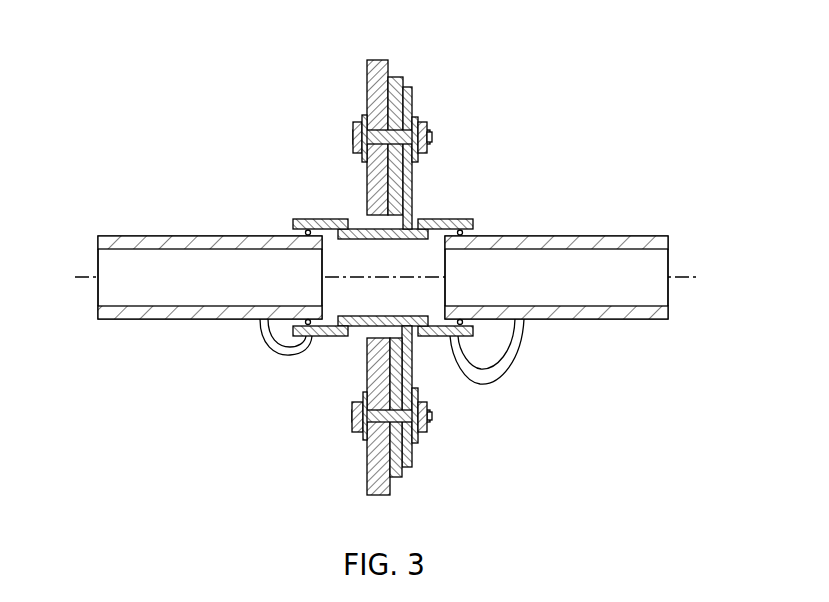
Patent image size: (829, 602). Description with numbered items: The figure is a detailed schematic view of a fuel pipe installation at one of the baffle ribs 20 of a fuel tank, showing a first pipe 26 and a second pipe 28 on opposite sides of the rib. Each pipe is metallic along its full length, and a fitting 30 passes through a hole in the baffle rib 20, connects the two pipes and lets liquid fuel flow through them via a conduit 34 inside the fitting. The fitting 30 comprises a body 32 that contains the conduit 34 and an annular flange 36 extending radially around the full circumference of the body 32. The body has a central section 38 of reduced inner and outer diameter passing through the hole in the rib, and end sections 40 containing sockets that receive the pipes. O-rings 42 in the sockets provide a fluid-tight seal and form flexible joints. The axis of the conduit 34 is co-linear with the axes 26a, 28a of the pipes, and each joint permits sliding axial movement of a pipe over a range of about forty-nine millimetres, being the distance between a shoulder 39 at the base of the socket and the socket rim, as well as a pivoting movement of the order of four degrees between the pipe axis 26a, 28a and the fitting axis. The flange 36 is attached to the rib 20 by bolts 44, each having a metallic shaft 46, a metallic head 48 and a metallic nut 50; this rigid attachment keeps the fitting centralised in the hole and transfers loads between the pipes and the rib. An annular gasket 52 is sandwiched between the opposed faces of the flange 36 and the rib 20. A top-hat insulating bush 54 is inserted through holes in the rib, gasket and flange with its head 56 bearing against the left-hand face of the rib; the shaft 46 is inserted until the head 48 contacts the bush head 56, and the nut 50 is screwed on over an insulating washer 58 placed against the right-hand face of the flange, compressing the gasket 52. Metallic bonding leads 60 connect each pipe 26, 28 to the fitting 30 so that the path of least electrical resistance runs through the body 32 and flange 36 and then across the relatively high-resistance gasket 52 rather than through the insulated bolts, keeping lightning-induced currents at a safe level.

The baffle rib 20 is at (367, 190).
The first pipe 26 is at (203, 236).
The axis of first pipe 26a is at (73, 277).
The second pipe 28 is at (607, 236).
The axis of second pipe 28a is at (694, 277).
The fitting 30 is at (404, 149).
The body 32 is at (464, 213).
The conduit 34 is at (395, 290).
The flange 36 is at (410, 178).
The central section 38 is at (362, 327).
The shoulder 39 is at (330, 316).
The end section 40 is at (320, 219).
The O-ring 42 is at (306, 229).
The bolt 44 is at (382, 427).
The shaft 46 is at (432, 416).
The head 48 is at (352, 416).
The nut 50 is at (427, 422).
The gasket 52 is at (397, 478).
The insulating bush 54 is at (367, 442).
The head of bush 56 is at (364, 398).
The insulating washer 58 is at (418, 443).
The metallic bonding lead 60 is at (522, 344).